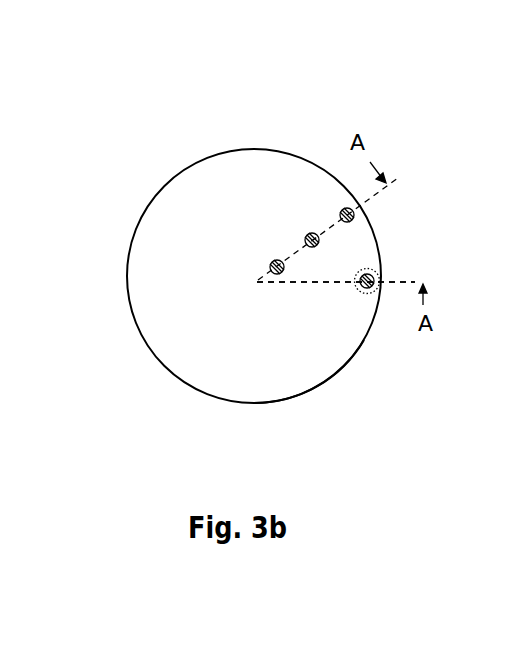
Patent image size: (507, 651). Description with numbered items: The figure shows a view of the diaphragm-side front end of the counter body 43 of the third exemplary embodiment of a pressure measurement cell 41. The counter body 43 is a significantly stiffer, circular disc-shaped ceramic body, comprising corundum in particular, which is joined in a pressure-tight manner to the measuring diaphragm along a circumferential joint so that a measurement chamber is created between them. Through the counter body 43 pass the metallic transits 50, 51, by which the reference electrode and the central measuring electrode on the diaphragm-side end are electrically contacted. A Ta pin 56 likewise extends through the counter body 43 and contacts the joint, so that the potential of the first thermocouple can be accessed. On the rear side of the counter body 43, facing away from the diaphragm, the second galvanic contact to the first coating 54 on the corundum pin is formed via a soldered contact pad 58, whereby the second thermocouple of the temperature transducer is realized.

The pressure measurement cell 41 is at (190, 88).
The counter body 43 is at (312, 391).
The metallic transit 50 is at (274, 260).
The metallic transit 51 is at (309, 233).
The first coating 54 is at (383, 280).
The Ta pin 56 is at (354, 217).
The soldered contact pad 58 is at (373, 292).